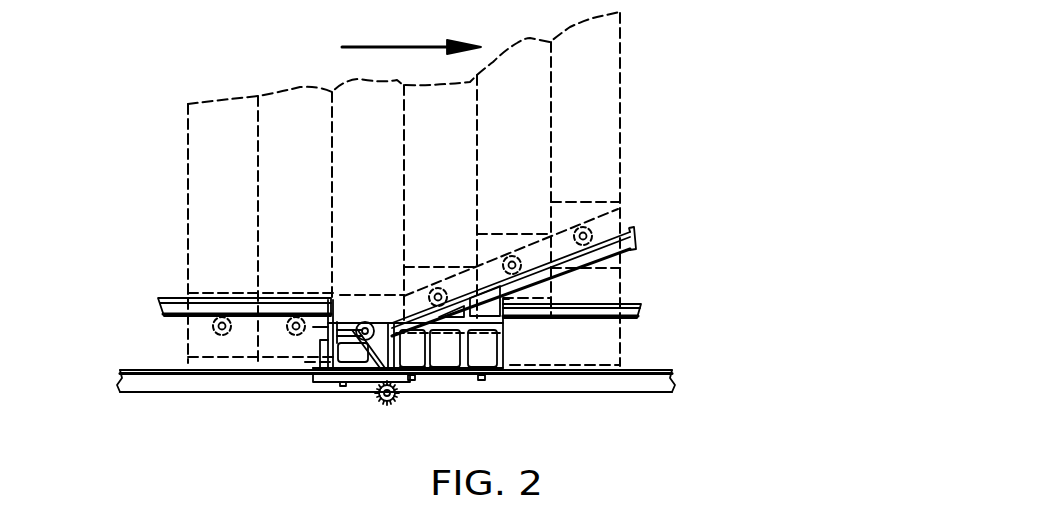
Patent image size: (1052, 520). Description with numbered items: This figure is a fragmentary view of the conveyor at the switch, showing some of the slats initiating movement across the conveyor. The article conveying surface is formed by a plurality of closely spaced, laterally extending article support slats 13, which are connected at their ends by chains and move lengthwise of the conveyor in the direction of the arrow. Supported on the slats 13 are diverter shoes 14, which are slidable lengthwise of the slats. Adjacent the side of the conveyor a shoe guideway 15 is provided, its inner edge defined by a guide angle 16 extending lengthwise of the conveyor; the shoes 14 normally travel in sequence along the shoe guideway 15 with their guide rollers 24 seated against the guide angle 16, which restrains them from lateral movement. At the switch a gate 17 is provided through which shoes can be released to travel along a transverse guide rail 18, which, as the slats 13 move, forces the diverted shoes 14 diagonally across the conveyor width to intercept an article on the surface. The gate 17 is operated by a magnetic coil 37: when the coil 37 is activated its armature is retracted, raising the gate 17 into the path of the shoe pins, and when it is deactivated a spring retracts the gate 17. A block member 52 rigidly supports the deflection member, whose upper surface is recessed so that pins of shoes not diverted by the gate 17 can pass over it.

The article support slats 13 is at (187, 143).
The diverter shoes 14 is at (186, 334).
The shoe guideway 15 is at (168, 327).
The guide angle 16 is at (172, 296).
The gate 17 is at (320, 398).
The transverse guide rail 18 is at (633, 233).
The guide rollers 24 is at (221, 346).
The magnetic coil 37 is at (380, 414).
The block member 52 is at (430, 352).